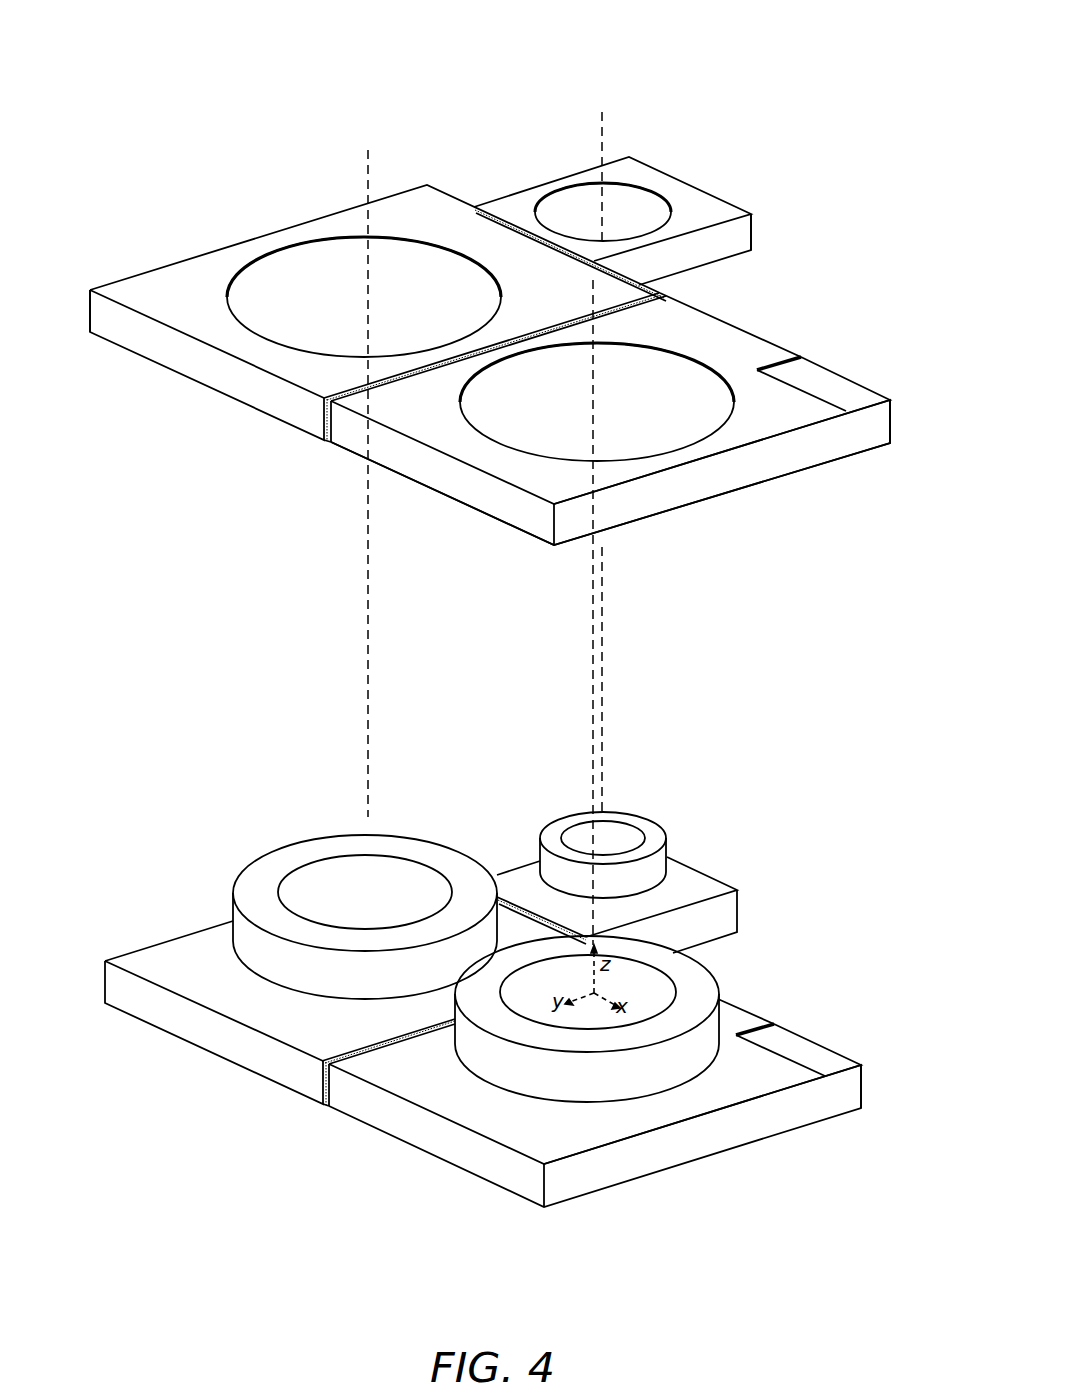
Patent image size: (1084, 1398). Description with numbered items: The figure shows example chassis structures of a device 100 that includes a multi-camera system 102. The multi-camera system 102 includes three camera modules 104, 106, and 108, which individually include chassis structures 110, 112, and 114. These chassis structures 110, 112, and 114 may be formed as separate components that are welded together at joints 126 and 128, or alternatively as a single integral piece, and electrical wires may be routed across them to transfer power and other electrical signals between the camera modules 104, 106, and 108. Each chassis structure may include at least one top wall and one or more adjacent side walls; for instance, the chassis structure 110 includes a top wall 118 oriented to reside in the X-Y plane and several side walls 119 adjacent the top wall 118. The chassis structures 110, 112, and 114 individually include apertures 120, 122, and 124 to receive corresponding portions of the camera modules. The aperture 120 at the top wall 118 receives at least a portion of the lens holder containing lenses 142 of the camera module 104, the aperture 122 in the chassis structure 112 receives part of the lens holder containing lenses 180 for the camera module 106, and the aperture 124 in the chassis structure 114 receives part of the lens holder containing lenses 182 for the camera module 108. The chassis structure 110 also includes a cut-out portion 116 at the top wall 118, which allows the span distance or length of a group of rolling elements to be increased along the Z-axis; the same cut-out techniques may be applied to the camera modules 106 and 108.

The device 100 is at (203, 33).
The multi-camera system 102 is at (301, 112).
The camera module 104 is at (888, 477).
The camera module 106 is at (128, 410).
The camera module 108 is at (563, 149).
The chassis structure 110 is at (780, 476).
The chassis structure 112 is at (320, 219).
The chassis structure 114 is at (754, 232).
The cut-out portion 116 is at (833, 383).
The top wall 118 is at (718, 330).
The side walls 119 is at (500, 510).
The aperture 120 is at (713, 413).
The aperture 122 is at (358, 307).
The aperture 124 is at (619, 233).
The joint 126 is at (321, 424).
The joint 128 is at (484, 213).
The lenses 142 is at (704, 972).
The lenses 180 is at (237, 878).
The lenses 182 is at (670, 835).